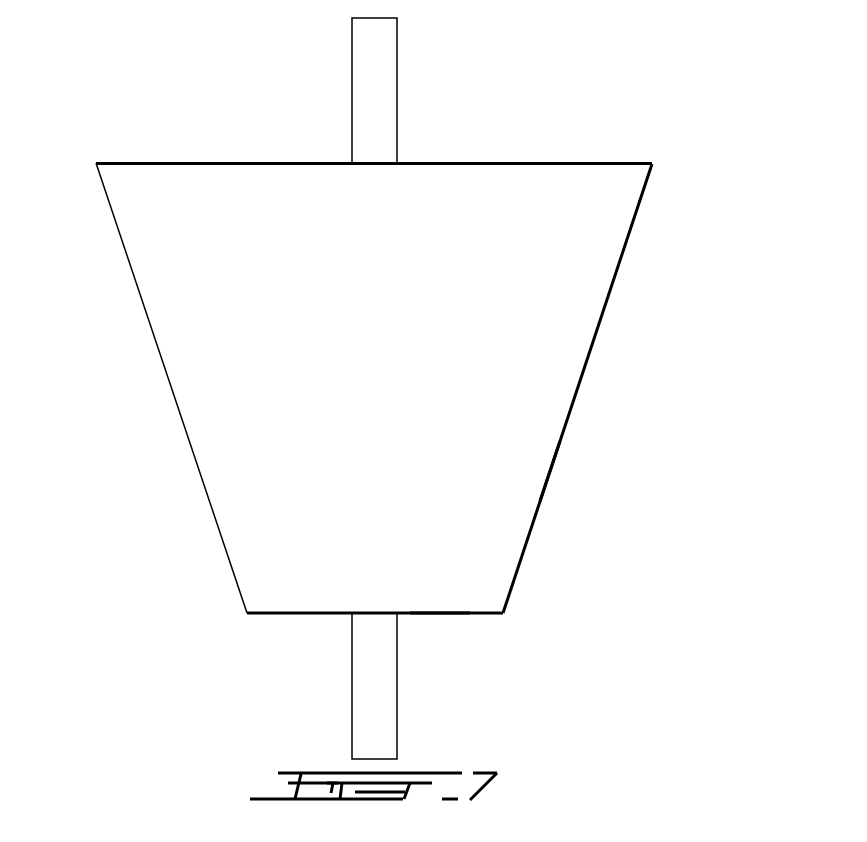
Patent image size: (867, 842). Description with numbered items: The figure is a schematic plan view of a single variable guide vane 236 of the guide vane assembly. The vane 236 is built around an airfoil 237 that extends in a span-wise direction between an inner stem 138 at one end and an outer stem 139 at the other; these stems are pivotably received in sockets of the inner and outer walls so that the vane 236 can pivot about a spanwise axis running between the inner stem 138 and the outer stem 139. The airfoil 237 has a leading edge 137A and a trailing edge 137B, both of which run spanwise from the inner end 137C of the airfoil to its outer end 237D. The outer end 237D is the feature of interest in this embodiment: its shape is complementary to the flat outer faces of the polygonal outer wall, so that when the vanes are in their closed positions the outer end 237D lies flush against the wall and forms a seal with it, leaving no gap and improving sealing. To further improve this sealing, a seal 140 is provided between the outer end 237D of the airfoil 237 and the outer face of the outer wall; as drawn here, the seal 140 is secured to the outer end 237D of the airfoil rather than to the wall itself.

The vane 236 is at (737, 151).
The airfoil 237 is at (393, 363).
The outer end 237D is at (293, 163).
The leading edge 137A is at (172, 389).
The trailing edge 137B is at (593, 349).
The inner end 137C is at (280, 615).
The seal 140 is at (172, 163).
The outer stem 139 is at (397, 92).
The inner stem 138 is at (397, 710).